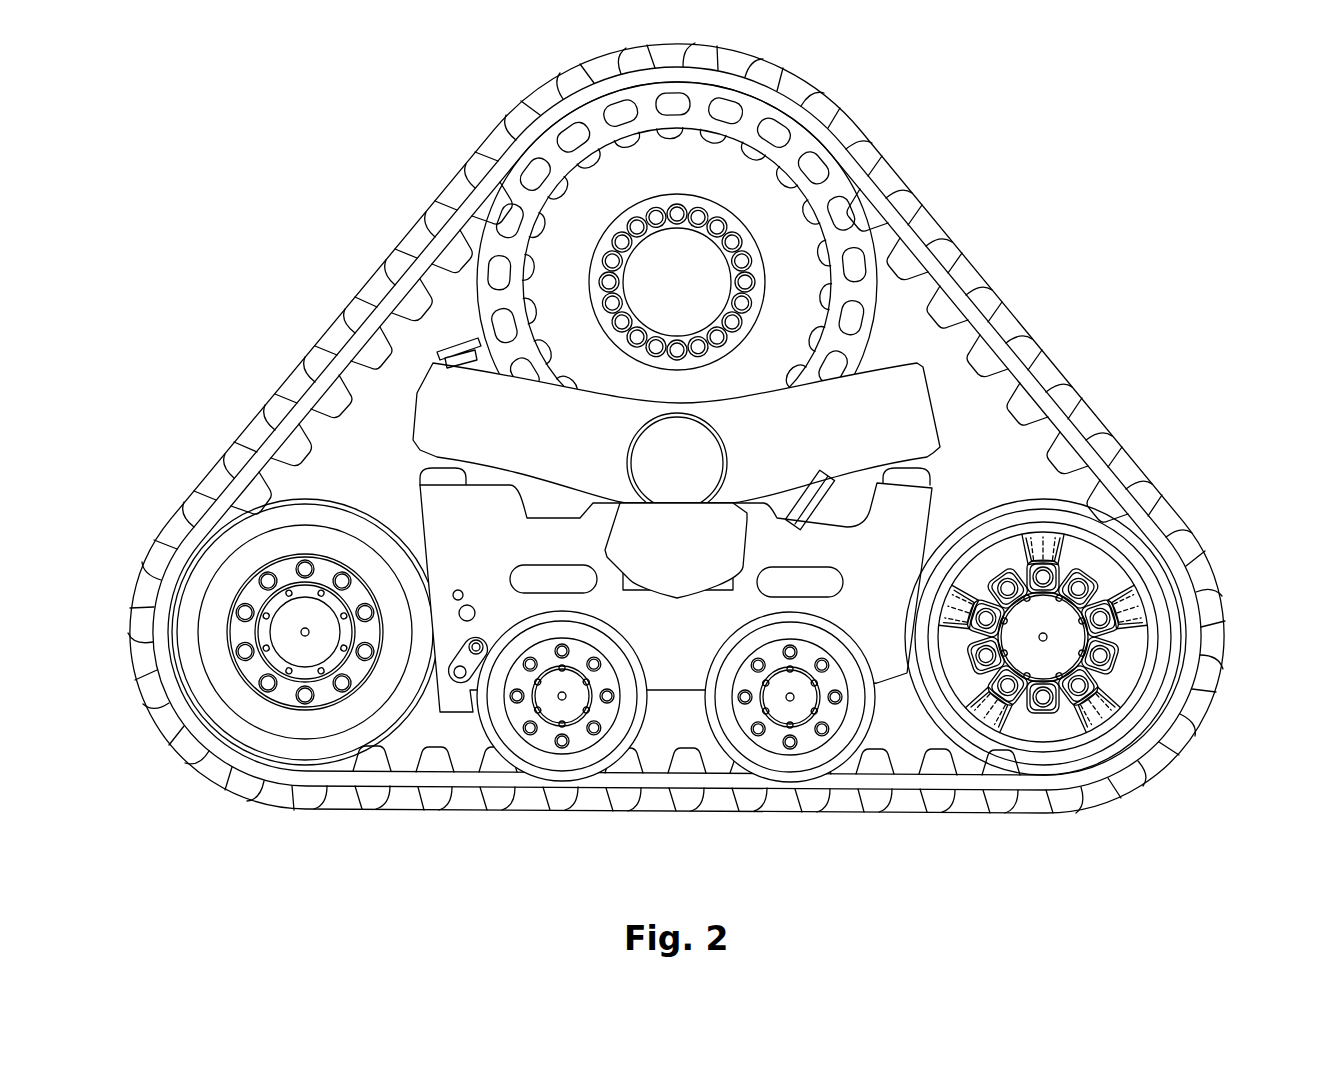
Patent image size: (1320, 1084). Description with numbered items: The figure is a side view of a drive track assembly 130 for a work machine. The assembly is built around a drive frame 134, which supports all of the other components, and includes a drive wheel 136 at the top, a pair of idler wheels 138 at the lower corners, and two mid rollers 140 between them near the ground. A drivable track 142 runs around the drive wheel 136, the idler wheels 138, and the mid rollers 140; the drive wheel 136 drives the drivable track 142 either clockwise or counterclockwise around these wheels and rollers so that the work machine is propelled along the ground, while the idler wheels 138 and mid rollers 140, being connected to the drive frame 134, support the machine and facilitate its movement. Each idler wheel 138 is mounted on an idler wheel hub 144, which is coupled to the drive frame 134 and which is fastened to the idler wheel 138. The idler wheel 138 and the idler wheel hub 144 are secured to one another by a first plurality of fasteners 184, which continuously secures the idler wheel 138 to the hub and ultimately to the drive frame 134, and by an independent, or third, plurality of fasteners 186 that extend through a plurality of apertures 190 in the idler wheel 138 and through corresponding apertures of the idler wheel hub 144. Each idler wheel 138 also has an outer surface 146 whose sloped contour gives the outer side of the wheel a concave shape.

The drive track assembly 130 is at (1110, 161).
The drive frame 134 is at (340, 578).
The drive wheel 136 is at (738, 178).
The idler wheel 138 is at (611, 556).
The mid roller 140 is at (545, 740).
The drivable track 142 is at (987, 292).
The idler wheel hub 144 is at (308, 656).
The outer surface 146 is at (172, 651).
The first plurality of fasteners 184 is at (300, 565).
The independent plurality of fasteners 186 is at (290, 560).
The apertures 190 is at (335, 676).